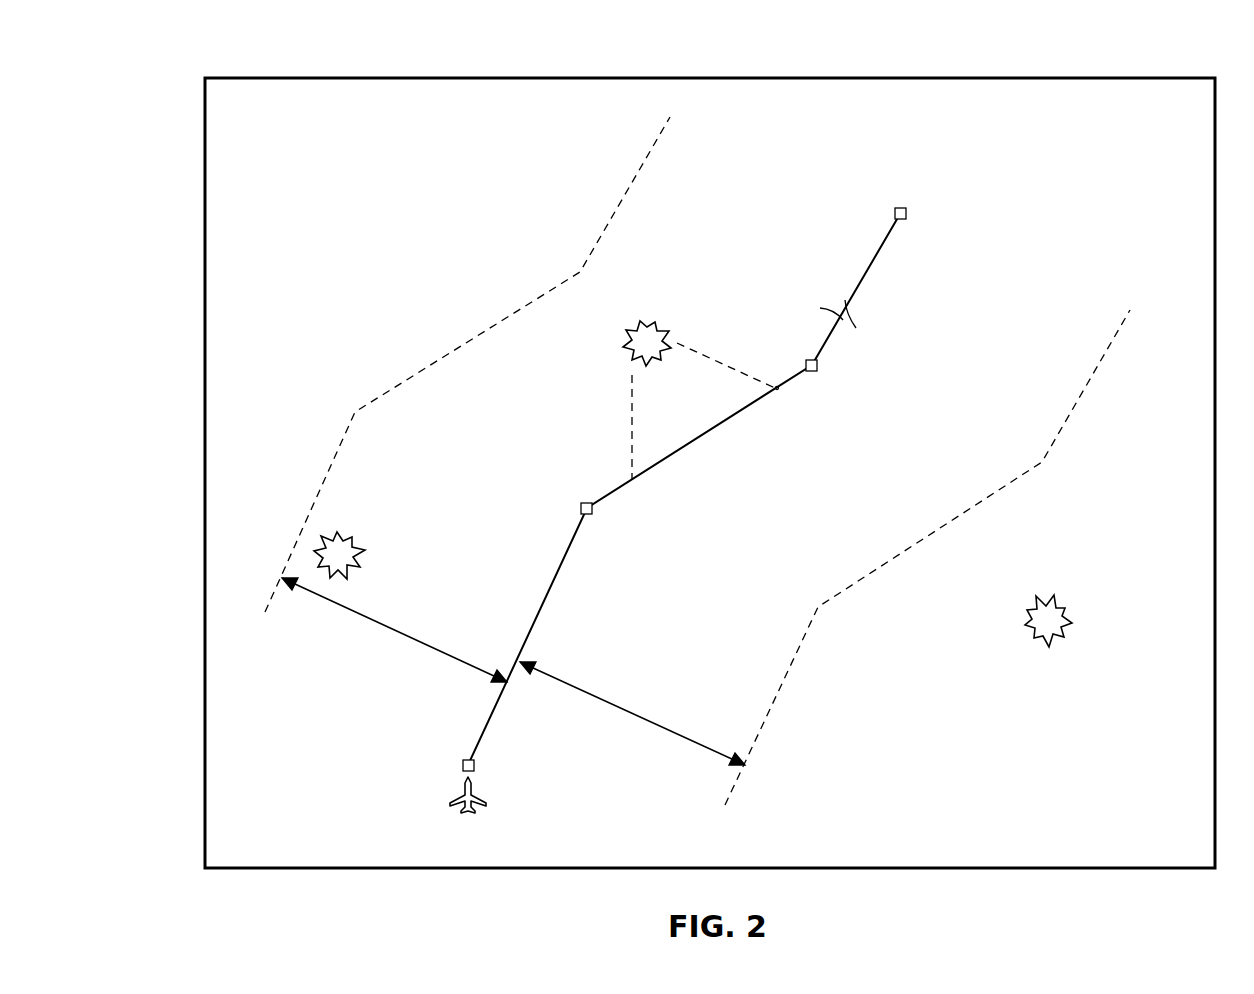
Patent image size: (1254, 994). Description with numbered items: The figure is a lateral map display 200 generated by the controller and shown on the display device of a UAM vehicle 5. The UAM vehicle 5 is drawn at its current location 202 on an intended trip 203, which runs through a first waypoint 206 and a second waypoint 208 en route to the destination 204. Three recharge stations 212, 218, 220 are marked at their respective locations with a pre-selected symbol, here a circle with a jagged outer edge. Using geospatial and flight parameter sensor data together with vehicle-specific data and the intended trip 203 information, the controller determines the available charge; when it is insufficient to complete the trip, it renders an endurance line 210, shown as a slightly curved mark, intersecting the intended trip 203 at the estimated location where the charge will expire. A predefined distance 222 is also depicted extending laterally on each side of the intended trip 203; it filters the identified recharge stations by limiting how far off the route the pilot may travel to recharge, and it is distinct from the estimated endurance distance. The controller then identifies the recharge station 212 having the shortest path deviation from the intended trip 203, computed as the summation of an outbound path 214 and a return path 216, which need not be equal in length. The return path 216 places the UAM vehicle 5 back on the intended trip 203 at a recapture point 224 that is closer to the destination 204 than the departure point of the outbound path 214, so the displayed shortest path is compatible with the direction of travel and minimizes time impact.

The map display 200 is at (214, 58).
The UAM vehicle 5 is at (480, 806).
The current location 202 is at (475, 767).
The intended trip 203 is at (867, 262).
The destination 204 is at (907, 215).
The waypoint 206 is at (594, 511).
The waypoint 208 is at (818, 368).
The endurance line 210 is at (850, 318).
The recharge station 212 is at (664, 330).
The outbound path 214 is at (630, 436).
The return path 216 is at (712, 358).
The recharge station 218 is at (352, 540).
The recharge station 220 is at (1060, 608).
The predefined distance 222 is at (395, 630).
The recapture point 224 is at (778, 391).